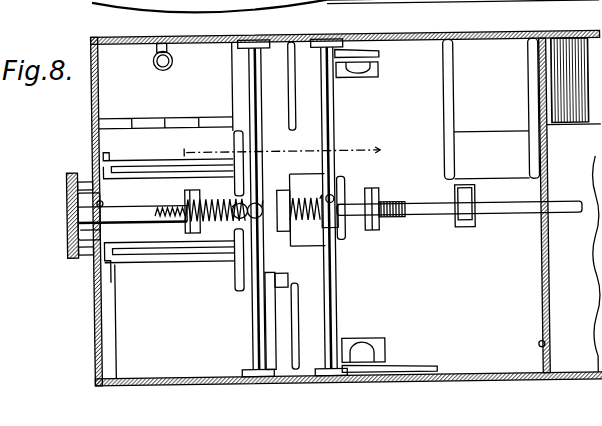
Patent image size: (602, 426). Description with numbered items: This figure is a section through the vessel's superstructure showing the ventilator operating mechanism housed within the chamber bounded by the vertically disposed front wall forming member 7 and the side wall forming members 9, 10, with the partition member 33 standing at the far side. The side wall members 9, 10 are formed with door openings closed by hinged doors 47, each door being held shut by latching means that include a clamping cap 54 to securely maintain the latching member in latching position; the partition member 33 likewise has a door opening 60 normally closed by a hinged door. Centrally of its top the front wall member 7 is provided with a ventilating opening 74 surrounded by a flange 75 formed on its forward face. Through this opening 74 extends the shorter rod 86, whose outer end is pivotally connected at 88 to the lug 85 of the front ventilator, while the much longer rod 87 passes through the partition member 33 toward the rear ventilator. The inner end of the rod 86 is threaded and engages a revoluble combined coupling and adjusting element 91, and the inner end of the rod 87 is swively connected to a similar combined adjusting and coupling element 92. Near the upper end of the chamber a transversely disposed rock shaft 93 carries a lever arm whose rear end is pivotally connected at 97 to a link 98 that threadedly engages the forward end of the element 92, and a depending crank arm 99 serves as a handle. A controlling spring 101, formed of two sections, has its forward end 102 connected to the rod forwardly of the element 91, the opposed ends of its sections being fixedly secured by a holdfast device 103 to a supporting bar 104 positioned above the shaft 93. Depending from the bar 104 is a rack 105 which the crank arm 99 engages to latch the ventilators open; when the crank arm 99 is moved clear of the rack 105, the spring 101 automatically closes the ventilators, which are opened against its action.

The front wall forming member 7 is at (92, 107).
The side wall forming member 9 is at (457, 21).
The side wall forming member 10 is at (474, 376).
The partition member 33 is at (549, 228).
The door 47 is at (383, 50).
The clamping cap 54 is at (370, 70).
The door opening 60 is at (490, 181).
The ventilating opening 74 is at (88, 236).
The flange 75 is at (89, 180).
The lug 85 is at (86, 222).
The rod 86 is at (124, 205).
The rod 87 is at (497, 213).
The pivotal connection 88 is at (78, 208).
The combined coupling and adjusting element 91 is at (196, 240).
The combined adjusting and coupling element 92 is at (373, 229).
The rock shaft 93 is at (337, 91).
The pivotal connection 97 is at (340, 200).
The link 98 is at (386, 203).
The crank arm 99 is at (322, 271).
The controlling spring 101 is at (330, 272).
The forward end of spring 102 is at (190, 232).
The holdfast device 103 is at (262, 197).
The supporting bar 104 is at (253, 86).
The rack 105 is at (272, 279).